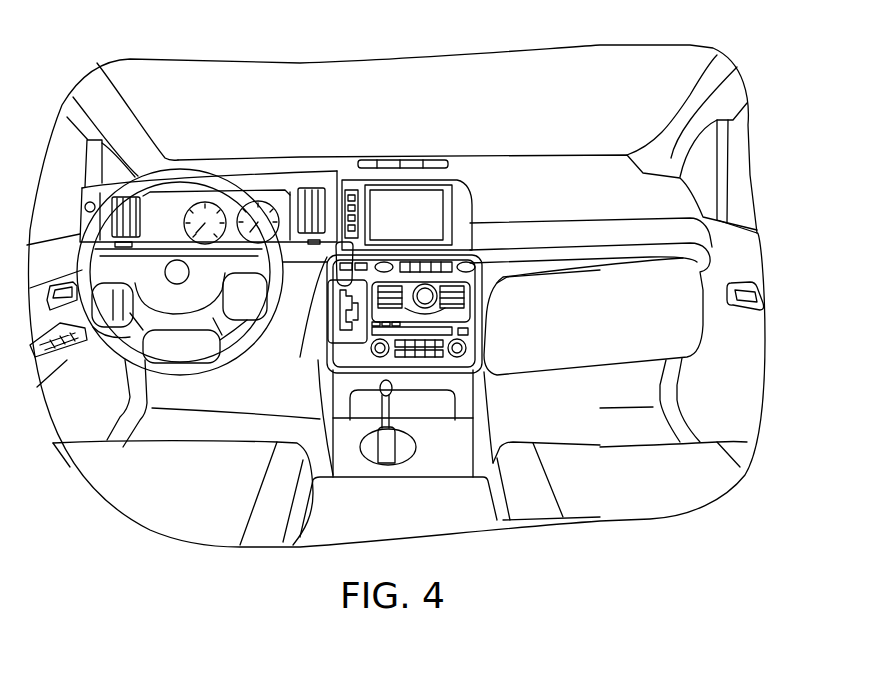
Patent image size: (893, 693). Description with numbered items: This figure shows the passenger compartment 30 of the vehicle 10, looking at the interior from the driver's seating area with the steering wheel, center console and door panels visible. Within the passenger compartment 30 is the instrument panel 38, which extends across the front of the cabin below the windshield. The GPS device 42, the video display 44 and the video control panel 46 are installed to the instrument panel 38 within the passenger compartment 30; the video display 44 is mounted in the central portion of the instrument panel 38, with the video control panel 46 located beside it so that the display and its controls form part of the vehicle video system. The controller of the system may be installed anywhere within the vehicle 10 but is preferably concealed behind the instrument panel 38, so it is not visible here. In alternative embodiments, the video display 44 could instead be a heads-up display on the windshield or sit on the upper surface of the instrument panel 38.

The vehicle 10 is at (110, 37).
The passenger compartment 30 is at (220, 90).
The instrument panel 38 is at (575, 188).
The GPS device 42 is at (417, 212).
The video display 44 is at (458, 215).
The video control panel 46 is at (350, 187).